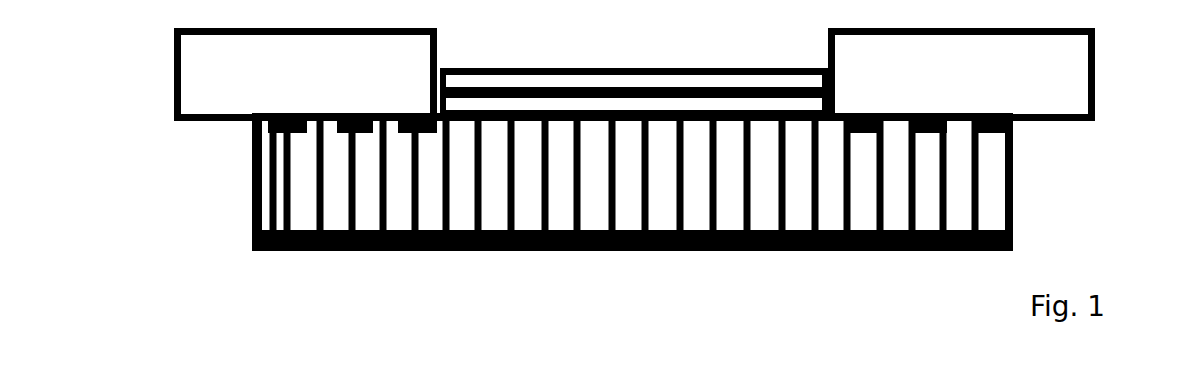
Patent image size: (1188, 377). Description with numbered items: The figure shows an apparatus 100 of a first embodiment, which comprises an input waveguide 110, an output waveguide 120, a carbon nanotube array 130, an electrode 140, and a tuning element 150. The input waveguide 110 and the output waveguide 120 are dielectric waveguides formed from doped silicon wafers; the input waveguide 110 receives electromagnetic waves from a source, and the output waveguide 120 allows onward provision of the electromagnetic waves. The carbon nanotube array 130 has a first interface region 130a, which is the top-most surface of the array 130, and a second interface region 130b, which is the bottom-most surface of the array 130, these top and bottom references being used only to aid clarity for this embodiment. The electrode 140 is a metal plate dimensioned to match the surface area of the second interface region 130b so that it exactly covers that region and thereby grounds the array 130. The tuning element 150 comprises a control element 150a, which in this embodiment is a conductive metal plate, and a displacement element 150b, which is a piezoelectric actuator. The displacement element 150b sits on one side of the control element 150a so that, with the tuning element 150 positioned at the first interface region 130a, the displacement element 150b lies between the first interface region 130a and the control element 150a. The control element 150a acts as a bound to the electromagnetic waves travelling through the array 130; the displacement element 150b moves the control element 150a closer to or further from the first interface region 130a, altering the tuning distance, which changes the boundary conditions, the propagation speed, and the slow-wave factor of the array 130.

The apparatus 100 is at (388, 276).
The input waveguide 110 is at (328, 92).
The output waveguide 120 is at (995, 93).
The carbon nanotube array 130 is at (631, 171).
The first interface region 130a is at (240, 123).
The second interface region 130b is at (1028, 234).
The electrode 140 is at (737, 247).
The tuning element 150 is at (634, 58).
The control element 150a is at (663, 82).
The displacement element 150b is at (718, 102).